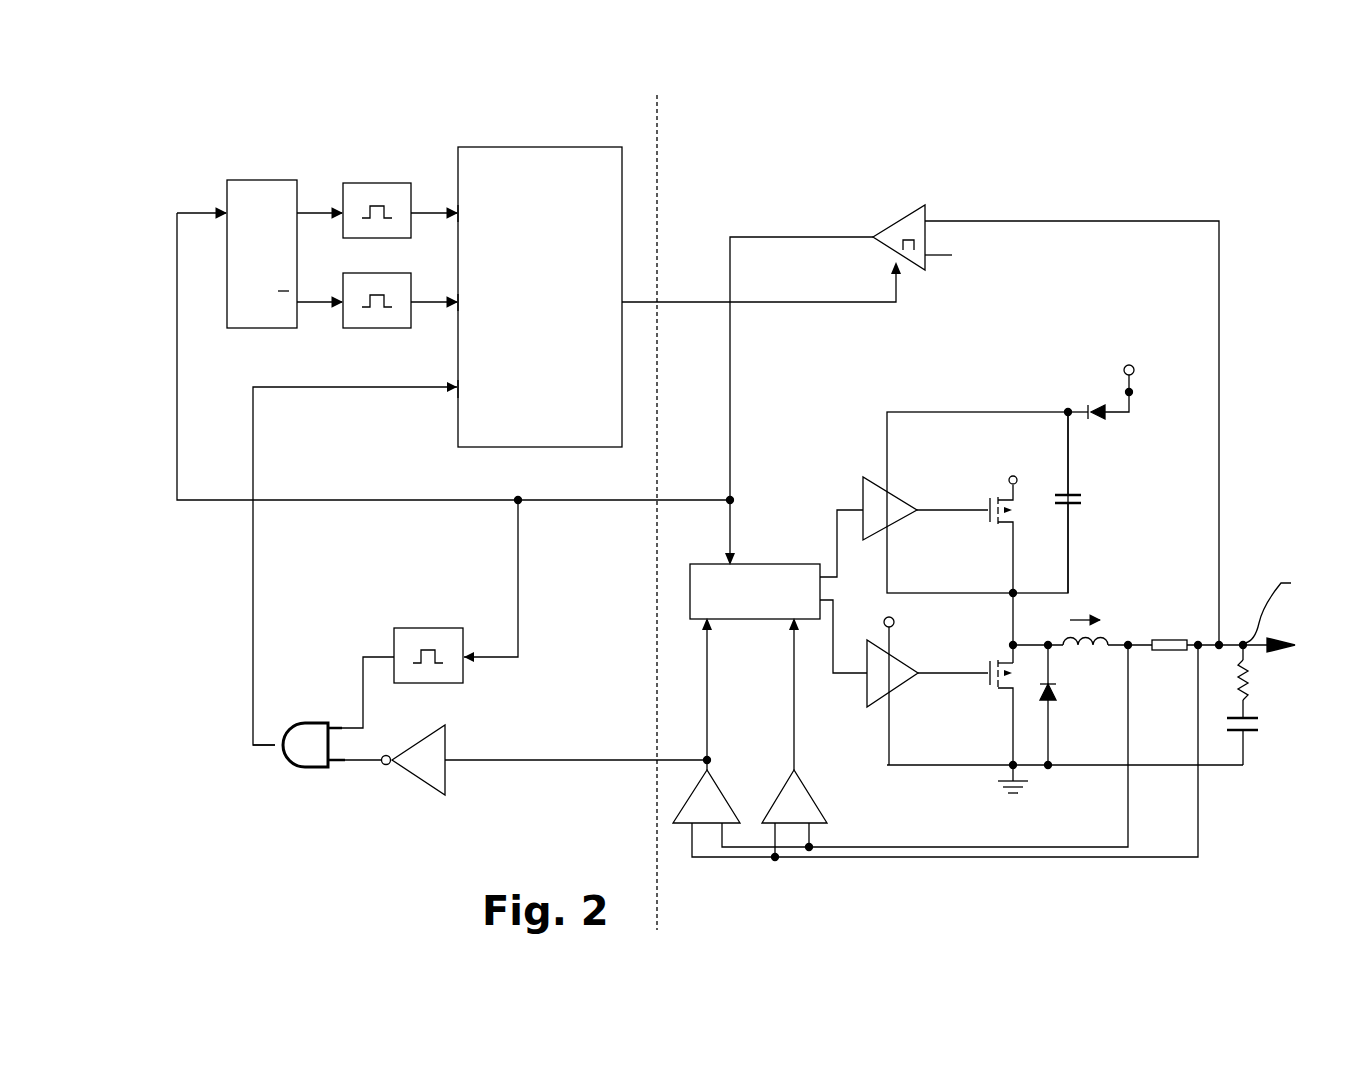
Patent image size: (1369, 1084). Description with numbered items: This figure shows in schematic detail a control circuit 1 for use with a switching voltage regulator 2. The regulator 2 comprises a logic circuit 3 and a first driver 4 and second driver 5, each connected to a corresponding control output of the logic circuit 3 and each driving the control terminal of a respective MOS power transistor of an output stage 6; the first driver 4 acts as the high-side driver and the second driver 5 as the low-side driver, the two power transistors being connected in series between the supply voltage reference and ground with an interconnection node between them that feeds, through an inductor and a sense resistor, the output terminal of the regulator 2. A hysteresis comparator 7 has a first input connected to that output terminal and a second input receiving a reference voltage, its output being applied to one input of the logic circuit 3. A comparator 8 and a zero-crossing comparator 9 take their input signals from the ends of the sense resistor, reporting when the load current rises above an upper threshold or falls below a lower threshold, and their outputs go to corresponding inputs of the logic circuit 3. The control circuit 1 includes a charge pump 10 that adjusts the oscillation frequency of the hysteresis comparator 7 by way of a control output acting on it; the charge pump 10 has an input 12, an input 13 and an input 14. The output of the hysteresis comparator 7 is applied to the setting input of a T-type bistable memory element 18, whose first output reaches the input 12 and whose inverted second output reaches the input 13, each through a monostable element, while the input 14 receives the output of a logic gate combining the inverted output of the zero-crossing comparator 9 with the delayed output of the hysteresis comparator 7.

The control circuit 1 is at (264, 114).
The switching voltage regulator 2 is at (1250, 258).
The logic circuit 3 is at (782, 562).
The first driver 4 is at (884, 504).
The second driver 5 is at (883, 692).
The output stage 6 is at (1038, 552).
The hysteresis comparator 7 is at (897, 239).
The comparator 8 is at (806, 804).
The zero-crossing comparator 9 is at (716, 796).
The charge pump 10 is at (600, 236).
The input 12 is at (460, 217).
The input 13 is at (455, 306).
The input 14 is at (455, 392).
The bistable memory element 18 is at (250, 331).